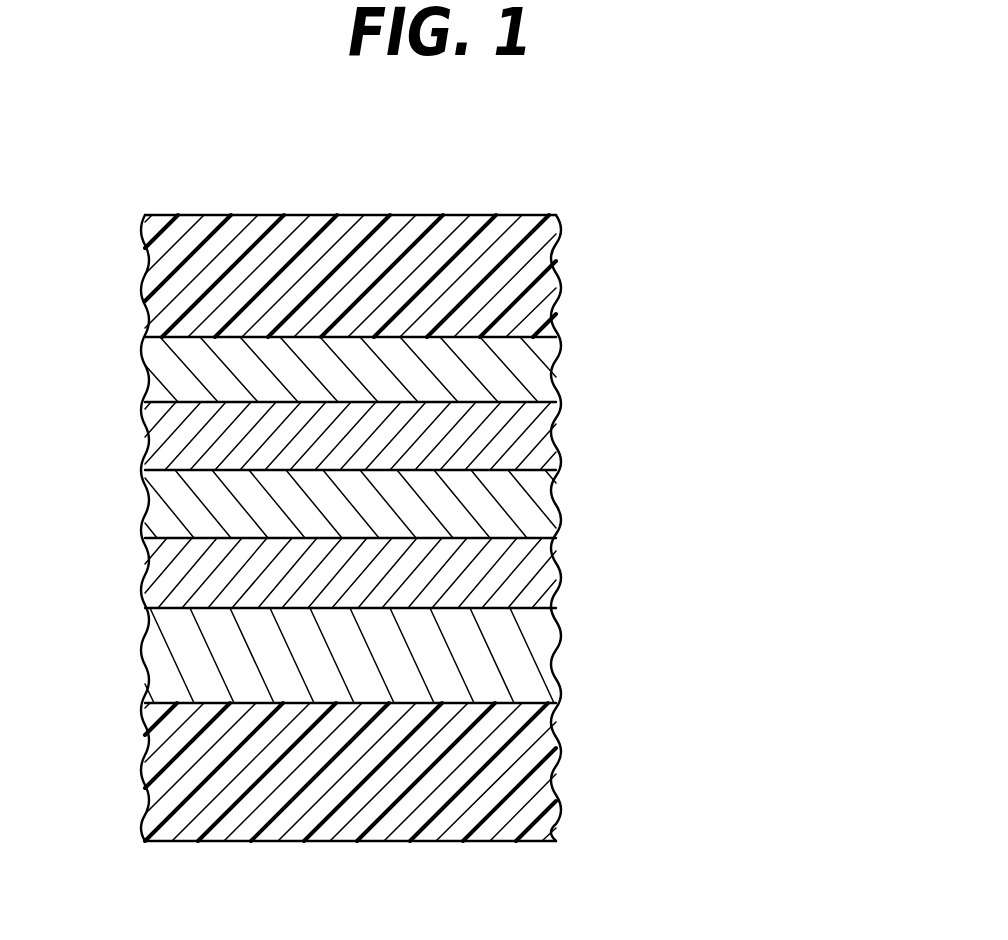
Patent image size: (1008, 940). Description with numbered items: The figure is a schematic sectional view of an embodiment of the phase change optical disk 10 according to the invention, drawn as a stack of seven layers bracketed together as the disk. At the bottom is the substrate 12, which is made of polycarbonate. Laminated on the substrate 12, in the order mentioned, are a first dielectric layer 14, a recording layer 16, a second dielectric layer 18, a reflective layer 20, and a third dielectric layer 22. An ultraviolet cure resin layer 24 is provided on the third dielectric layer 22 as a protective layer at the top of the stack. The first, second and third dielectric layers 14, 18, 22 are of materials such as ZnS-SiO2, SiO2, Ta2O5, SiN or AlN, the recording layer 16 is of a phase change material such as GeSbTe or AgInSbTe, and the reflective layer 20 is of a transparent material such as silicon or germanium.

The phase change optical disk 10 is at (98, 202).
The substrate 12 is at (553, 735).
The first dielectric layer 14 is at (553, 640).
The recording layer 16 is at (553, 577).
The second dielectric layer 18 is at (553, 493).
The reflective layer 20 is at (560, 425).
The third dielectric layer 22 is at (555, 360).
The ultraviolet cure resin layer 24 is at (560, 243).